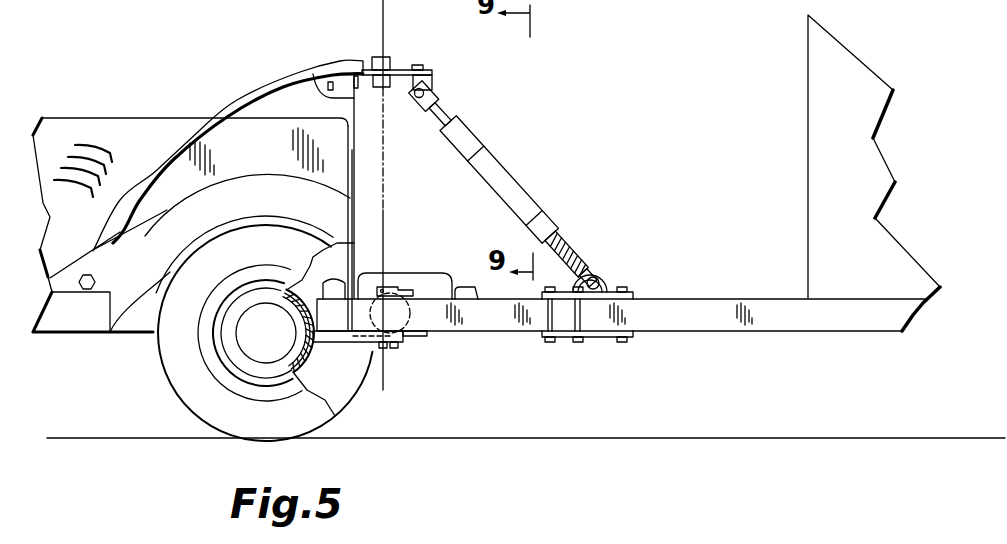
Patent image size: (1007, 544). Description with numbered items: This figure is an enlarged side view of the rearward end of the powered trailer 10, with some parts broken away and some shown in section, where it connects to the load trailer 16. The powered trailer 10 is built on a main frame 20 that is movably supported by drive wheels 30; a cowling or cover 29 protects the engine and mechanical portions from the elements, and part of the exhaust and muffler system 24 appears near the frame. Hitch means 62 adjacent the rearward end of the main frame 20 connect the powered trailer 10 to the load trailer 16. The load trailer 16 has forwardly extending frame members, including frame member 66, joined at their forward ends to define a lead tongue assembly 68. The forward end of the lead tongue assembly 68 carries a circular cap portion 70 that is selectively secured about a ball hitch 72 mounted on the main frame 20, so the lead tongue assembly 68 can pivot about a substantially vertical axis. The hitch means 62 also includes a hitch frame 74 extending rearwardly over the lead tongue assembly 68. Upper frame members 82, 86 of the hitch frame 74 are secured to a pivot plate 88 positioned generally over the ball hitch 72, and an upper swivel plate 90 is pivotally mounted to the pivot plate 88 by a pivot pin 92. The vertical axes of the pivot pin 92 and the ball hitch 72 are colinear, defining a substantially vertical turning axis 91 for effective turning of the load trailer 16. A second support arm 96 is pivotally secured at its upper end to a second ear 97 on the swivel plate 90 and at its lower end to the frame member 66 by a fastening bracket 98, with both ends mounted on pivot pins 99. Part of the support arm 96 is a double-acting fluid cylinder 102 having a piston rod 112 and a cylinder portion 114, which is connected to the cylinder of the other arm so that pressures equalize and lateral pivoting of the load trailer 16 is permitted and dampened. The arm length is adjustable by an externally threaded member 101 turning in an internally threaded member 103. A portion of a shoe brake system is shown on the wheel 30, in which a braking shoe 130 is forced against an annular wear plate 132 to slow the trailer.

The powered trailer 10 is at (101, 85).
The load trailer 16 is at (848, 140).
The main frame 20 is at (72, 323).
The exhaust and muffler system 24 is at (435, 272).
The cowling or cover 29 is at (131, 117).
The wheels 30 is at (180, 383).
The hitch means 62 is at (597, 190).
The frame member 66 is at (717, 323).
The lead tongue assembly 68 is at (487, 330).
The circular cap portion 70 is at (373, 293).
The ball hitch 72 is at (417, 333).
The hitch frame 74 is at (483, 92).
The upper frame member 82 is at (240, 96).
The upper frame member 86 is at (333, 98).
The pivot plate 88 is at (400, 70).
The upper swivel plate 90 is at (432, 80).
The vertical turning axis 91 is at (387, 215).
The pivot pin 92 is at (373, 62).
The second support arm 96 is at (520, 195).
The second ear 97 is at (410, 88).
The fastening bracket 98 is at (595, 340).
The pivot pin 99 is at (426, 93).
The externally threaded member 101 is at (571, 249).
The double-acting fluid cylinder 102 is at (492, 155).
The internally threaded member 103 is at (512, 212).
The piston rod 112 is at (450, 118).
The cylinder portion 114 is at (473, 143).
The braking shoe 130 is at (303, 355).
The annular wear plate 132 is at (309, 346).